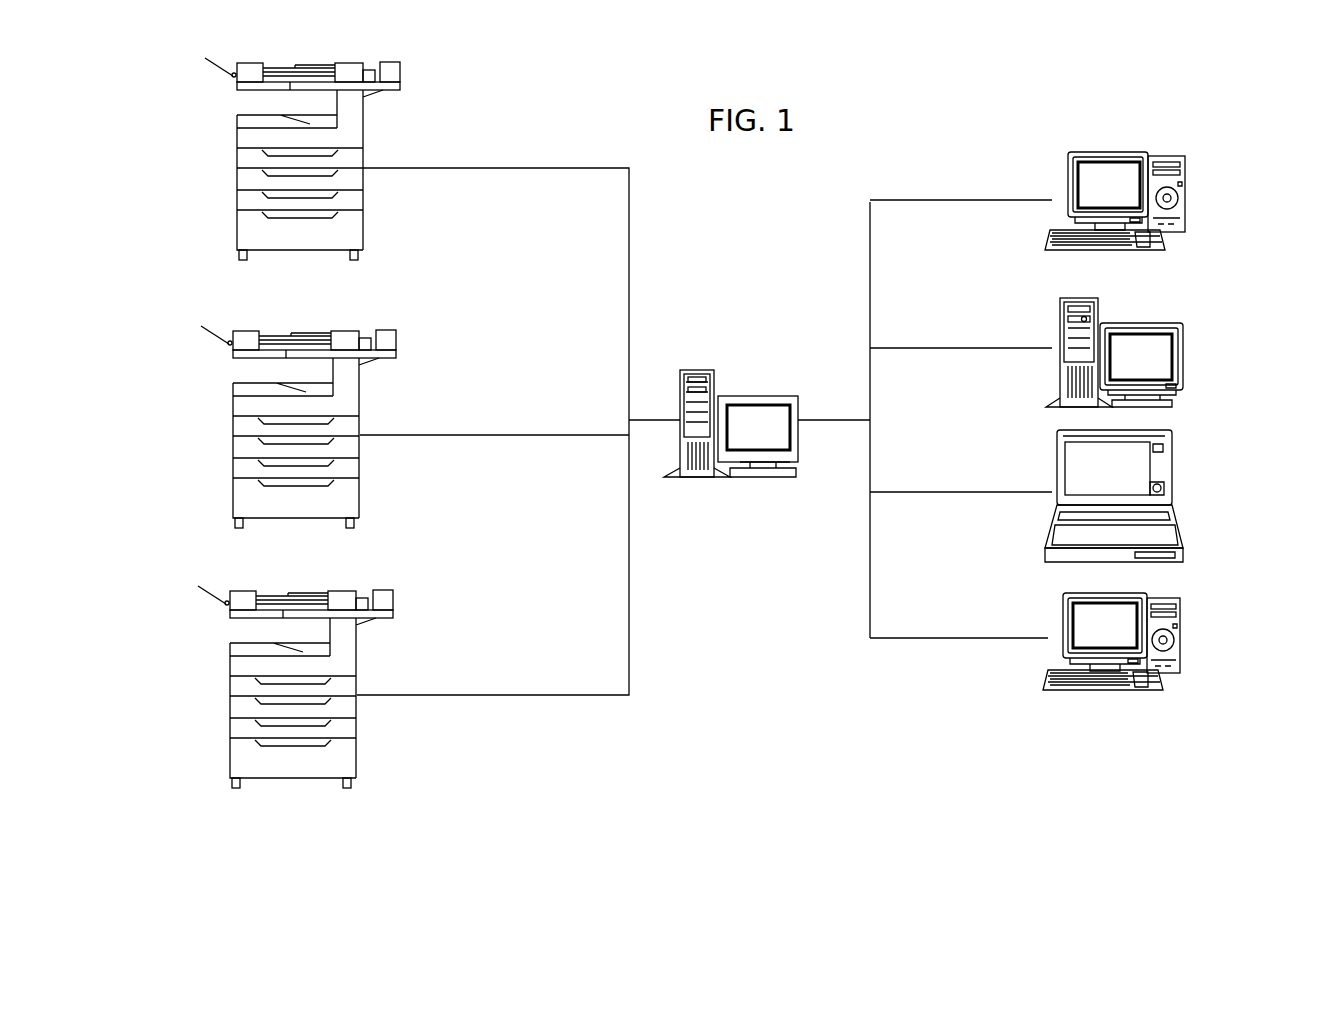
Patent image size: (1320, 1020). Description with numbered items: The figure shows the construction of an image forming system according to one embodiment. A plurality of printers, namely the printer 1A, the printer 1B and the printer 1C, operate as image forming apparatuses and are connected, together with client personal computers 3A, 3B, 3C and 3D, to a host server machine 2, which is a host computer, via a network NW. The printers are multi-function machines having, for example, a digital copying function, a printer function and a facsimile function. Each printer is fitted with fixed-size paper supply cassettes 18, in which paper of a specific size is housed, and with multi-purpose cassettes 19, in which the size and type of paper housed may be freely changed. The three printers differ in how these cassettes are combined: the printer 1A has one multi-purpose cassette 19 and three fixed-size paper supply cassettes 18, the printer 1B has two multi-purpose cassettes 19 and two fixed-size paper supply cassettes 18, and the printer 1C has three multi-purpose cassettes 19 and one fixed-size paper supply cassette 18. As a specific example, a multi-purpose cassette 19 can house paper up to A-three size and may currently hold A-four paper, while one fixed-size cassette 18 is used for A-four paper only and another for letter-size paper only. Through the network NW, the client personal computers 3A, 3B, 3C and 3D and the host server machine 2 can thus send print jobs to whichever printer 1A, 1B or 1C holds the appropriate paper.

The printer 1A is at (237, 157).
The printer 1B is at (268, 427).
The printer 1C is at (264, 687).
The fixed-size paper supply cassettes 18 is at (355, 178).
The multi-purpose cassettes 19 is at (355, 157).
The network NW is at (631, 247).
The host server machine 2 is at (760, 395).
The client personal computer 3A is at (1185, 201).
The client personal computer 3B is at (1186, 350).
The client personal computer 3C is at (1175, 495).
The client personal computer 3D is at (1180, 640).